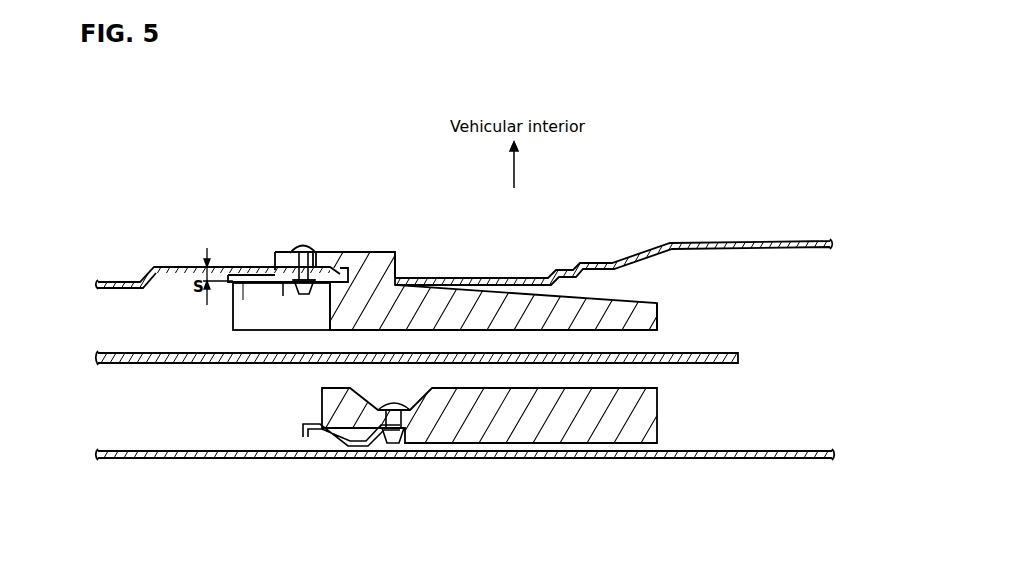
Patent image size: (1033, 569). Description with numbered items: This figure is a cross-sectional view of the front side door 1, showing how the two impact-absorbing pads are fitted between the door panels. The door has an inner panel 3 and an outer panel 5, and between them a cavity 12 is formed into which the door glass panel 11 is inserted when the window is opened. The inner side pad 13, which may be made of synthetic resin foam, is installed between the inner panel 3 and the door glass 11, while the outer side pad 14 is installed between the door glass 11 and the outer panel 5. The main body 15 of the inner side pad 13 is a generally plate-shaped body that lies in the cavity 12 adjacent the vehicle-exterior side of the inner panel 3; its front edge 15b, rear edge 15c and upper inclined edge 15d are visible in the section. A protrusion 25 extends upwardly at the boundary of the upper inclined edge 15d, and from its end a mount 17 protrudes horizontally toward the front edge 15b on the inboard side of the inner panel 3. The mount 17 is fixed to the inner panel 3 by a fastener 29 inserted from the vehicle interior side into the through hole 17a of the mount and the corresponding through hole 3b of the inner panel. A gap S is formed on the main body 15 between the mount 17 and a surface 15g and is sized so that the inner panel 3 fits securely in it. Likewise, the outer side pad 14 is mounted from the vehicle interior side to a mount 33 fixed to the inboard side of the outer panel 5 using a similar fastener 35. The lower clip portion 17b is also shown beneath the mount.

The front side door 1 is at (737, 457).
The inner panel 3 is at (183, 263).
The through hole 3b is at (300, 295).
The outer panel 5 is at (186, 459).
The door glass panel 11 is at (150, 365).
The cavity 12 is at (778, 356).
The inner side pad 13 is at (465, 286).
The outer side pad 14 is at (548, 433).
The main body 15 is at (513, 295).
The front edge 15b is at (233, 316).
The rear edge 15c is at (658, 312).
The upper inclined edge 15d is at (237, 276).
The surface 15g is at (243, 292).
The mount 17 is at (275, 252).
The through hole 17a is at (320, 250).
The leg of clip 17b is at (285, 293).
The protrusion 25 is at (397, 263).
The fastener 29 is at (297, 252).
The mount 33 is at (313, 440).
The fastener 35 is at (393, 402).